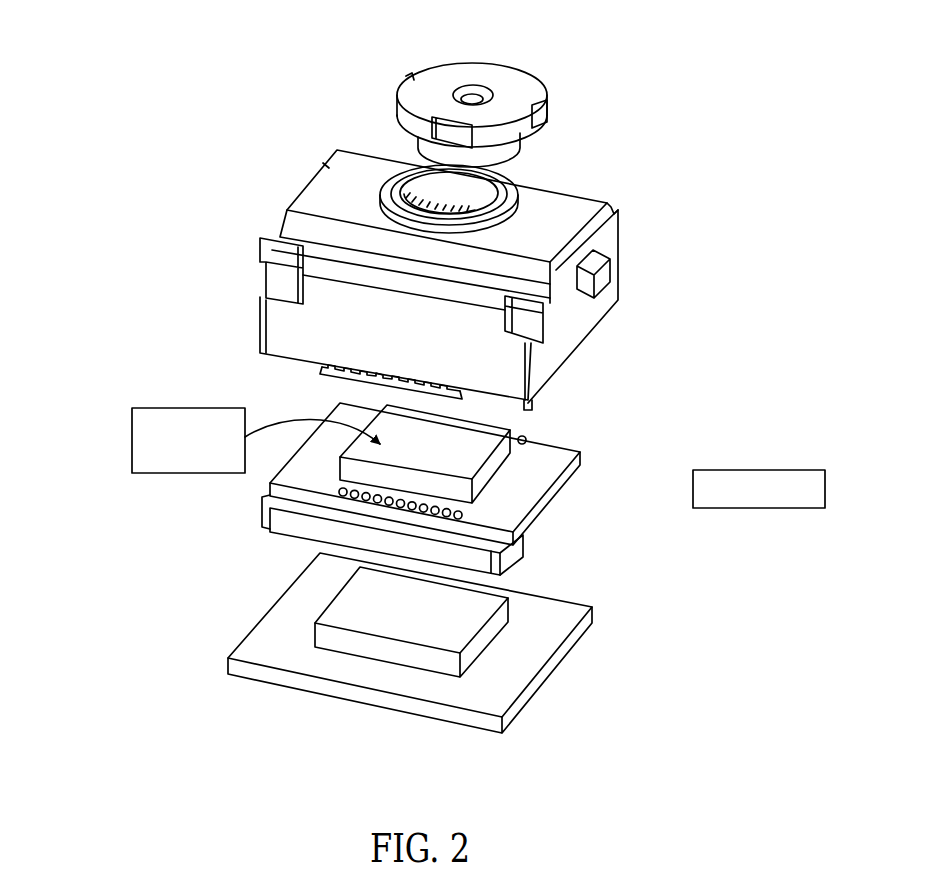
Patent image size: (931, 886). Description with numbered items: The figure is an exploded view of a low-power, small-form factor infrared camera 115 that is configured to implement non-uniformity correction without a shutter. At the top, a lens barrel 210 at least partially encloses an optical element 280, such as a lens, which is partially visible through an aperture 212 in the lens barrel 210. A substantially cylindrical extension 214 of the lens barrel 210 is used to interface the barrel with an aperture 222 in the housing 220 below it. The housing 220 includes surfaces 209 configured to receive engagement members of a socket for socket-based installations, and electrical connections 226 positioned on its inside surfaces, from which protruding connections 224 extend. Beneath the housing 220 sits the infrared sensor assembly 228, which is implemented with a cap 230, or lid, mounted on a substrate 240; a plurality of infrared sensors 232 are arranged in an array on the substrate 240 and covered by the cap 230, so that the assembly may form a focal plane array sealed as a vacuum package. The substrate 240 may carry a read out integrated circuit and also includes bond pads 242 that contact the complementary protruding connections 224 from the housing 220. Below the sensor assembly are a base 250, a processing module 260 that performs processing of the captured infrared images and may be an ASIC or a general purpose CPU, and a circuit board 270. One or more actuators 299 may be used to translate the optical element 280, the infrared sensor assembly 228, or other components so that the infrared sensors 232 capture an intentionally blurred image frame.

The infrared camera 115 is at (120, 702).
The surfaces 209 is at (273, 287).
The lens barrel 210 is at (548, 88).
The aperture 212 is at (495, 56).
The substantially cylindrical extension 214 is at (522, 162).
The housing 220 is at (572, 208).
The aperture 222 is at (505, 182).
The protruding connections 224 is at (383, 393).
The electrical connections 226 is at (427, 200).
The infrared sensor assembly 228 is at (662, 384).
The cap 230 is at (493, 430).
The infrared sensors 232 is at (148, 407).
The substrate 240 is at (581, 462).
The bond pads 242 is at (476, 512).
The base 250 is at (513, 553).
The processing module 260 is at (504, 606).
The circuit board 270 is at (576, 636).
The optical element 280 is at (480, 100).
The actuators 299 is at (803, 470).